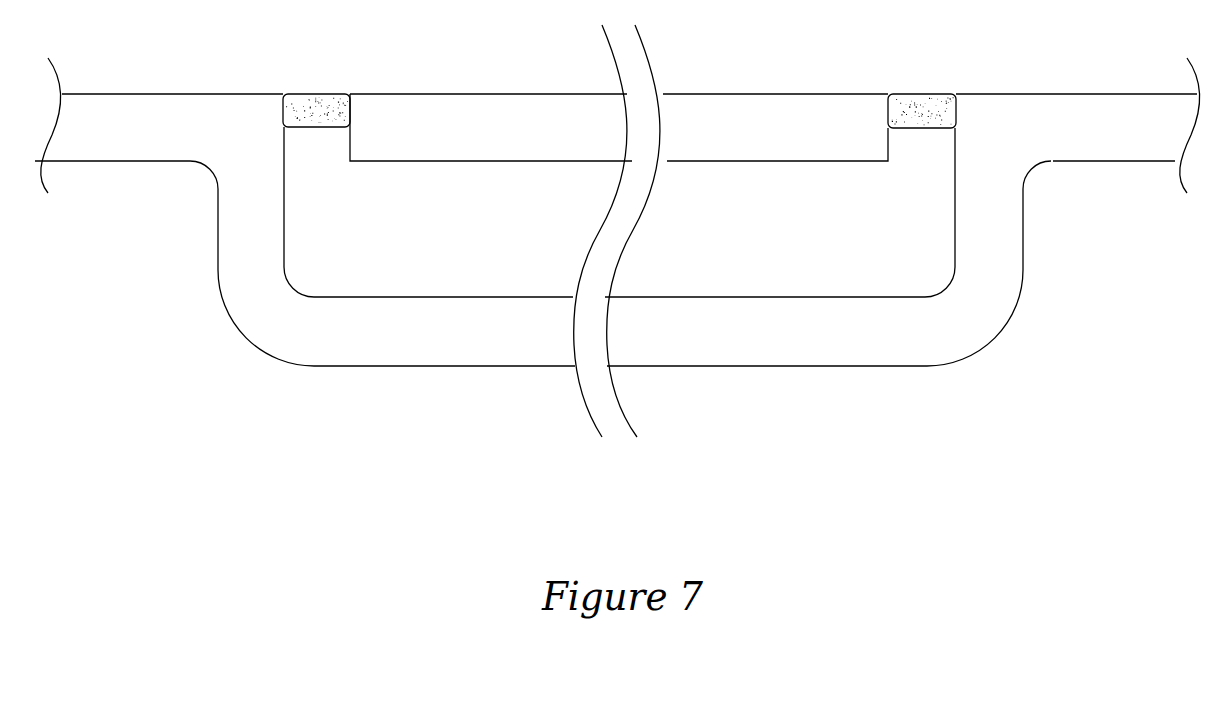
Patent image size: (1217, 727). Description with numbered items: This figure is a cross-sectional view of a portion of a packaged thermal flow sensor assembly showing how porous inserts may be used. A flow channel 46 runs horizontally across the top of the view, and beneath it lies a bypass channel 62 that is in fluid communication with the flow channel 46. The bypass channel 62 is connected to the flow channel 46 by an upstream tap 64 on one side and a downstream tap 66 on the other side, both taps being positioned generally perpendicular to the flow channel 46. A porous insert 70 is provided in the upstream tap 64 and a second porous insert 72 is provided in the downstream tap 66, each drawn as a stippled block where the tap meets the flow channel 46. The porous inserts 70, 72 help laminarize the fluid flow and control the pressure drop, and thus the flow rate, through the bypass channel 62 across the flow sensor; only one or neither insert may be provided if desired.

The flow channel 46 is at (529, 62).
The bypass channel 62 is at (564, 236).
The upstream tap 64 is at (326, 174).
The downstream tap 66 is at (916, 177).
The porous insert 70 is at (320, 96).
The porous insert 72 is at (922, 97).